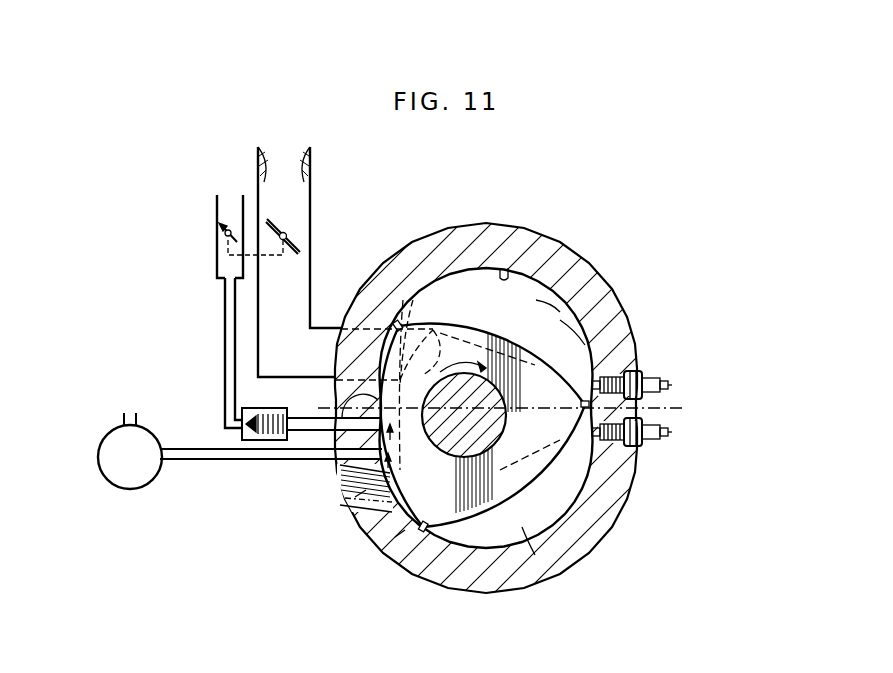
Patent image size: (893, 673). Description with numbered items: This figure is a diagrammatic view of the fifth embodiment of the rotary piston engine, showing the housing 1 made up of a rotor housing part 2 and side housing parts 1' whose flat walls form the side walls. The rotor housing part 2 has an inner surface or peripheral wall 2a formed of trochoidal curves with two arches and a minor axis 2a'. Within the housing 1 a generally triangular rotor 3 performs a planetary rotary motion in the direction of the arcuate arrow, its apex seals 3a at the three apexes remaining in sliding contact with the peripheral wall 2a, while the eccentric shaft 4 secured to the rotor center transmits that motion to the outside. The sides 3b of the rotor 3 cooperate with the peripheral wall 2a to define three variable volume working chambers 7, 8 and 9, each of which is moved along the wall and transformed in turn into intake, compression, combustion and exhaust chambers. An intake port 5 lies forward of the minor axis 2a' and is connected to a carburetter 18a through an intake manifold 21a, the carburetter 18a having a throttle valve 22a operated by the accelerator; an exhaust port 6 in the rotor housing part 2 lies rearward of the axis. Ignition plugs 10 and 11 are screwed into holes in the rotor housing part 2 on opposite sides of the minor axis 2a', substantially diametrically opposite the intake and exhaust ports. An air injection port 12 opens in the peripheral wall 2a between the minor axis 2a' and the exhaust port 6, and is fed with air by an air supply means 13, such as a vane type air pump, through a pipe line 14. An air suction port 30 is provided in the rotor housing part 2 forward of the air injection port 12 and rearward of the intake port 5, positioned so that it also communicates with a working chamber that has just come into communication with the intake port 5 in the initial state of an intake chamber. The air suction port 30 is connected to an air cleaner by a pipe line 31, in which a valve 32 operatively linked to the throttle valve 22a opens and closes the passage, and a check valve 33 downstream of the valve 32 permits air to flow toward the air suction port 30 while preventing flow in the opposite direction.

The housing 1 is at (446, 405).
The side housing part 1' is at (557, 258).
The rotor housing part 2 is at (472, 240).
The peripheral wall 2a is at (516, 236).
The minor axis 2a' is at (521, 389).
The rotor 3 is at (533, 373).
The apex seal 3a is at (397, 323).
The side of the rotor 3b is at (523, 343).
The shaft 4 is at (466, 447).
The intake port 5 is at (433, 336).
The exhaust port 6 is at (355, 497).
The working chamber 7 is at (560, 320).
The working chamber 8 is at (522, 527).
The working chamber 9 is at (395, 537).
The ignition plug 10 is at (637, 446).
The ignition plug 11 is at (636, 374).
The air injection port 12 is at (348, 470).
The air supply means 13 is at (108, 440).
The pipe line 14 is at (242, 459).
The carburetter 18a is at (285, 165).
The intake manifold 21a is at (312, 297).
The throttle valve 22a is at (268, 218).
The air suction port 30 is at (345, 402).
The pipe line 31 is at (225, 374).
The valve 32 is at (226, 226).
The check valve 33 is at (242, 432).